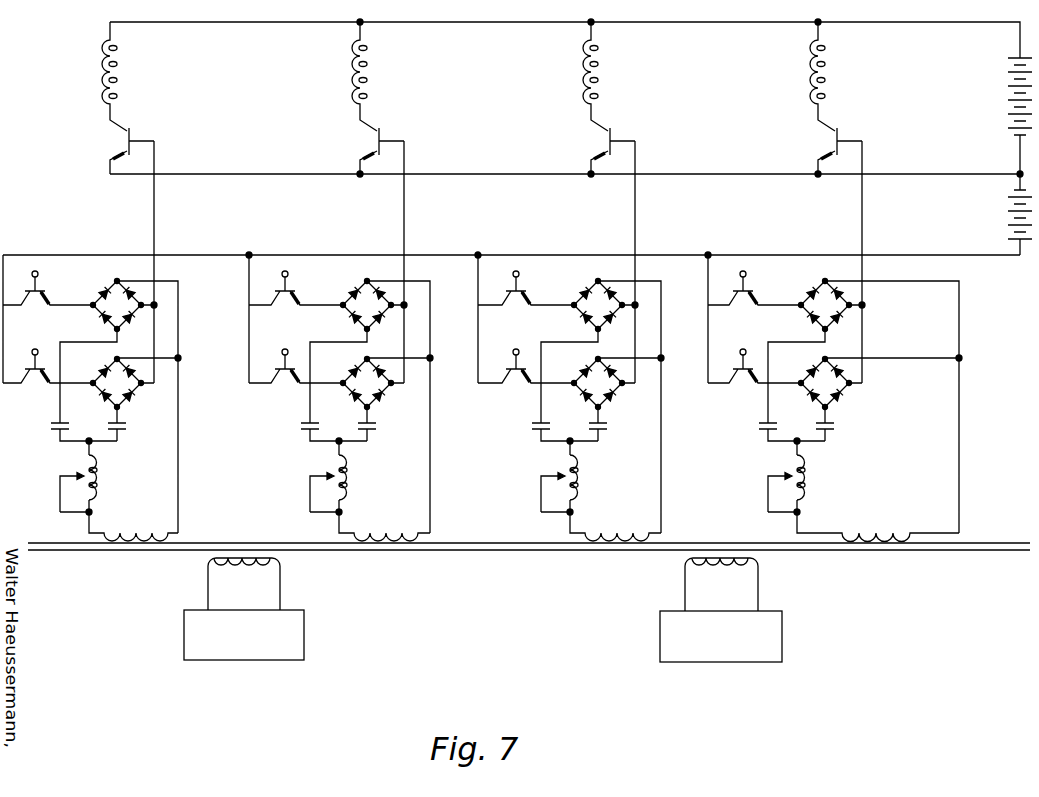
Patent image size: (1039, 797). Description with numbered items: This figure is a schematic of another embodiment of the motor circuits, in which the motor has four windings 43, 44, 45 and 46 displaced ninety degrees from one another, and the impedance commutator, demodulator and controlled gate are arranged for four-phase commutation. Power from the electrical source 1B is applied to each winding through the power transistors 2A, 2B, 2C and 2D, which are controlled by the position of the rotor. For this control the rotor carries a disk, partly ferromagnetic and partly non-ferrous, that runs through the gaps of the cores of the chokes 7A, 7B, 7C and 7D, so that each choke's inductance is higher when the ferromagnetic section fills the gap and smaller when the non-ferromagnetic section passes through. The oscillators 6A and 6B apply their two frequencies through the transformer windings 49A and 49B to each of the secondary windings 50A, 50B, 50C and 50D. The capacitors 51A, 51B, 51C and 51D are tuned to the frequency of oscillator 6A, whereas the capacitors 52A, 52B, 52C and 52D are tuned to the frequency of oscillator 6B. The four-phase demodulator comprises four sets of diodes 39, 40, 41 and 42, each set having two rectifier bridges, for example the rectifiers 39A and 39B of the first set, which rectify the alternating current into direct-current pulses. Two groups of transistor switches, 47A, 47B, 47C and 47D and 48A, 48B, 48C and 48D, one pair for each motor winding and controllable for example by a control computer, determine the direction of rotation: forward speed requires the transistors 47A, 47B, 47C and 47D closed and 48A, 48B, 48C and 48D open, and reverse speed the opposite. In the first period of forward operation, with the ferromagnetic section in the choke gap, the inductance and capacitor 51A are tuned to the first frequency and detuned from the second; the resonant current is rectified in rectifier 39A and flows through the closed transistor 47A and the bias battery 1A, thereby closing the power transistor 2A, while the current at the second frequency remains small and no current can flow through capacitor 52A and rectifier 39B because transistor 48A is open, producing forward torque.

The bias battery 1A is at (1003, 210).
The electrical source 1B is at (1003, 98).
The power transistor 2A is at (125, 141).
The power transistor 2B is at (365, 140).
The power transistor 2C is at (596, 140).
The power transistor 2D is at (823, 140).
The winding 43 is at (118, 80).
The winding 44 is at (379, 64).
The winding 45 is at (610, 64).
The winding 46 is at (837, 64).
The transistor switch 47A is at (44, 292).
The transistor switch 47B is at (301, 285).
The transistor switch 47C is at (532, 285).
The transistor switch 47D is at (759, 285).
The transistor switch 48A is at (35, 385).
The transistor switch 48B is at (301, 383).
The transistor switch 48C is at (532, 383).
The transistor switch 48D is at (759, 383).
The set of diodes 39 is at (105, 352).
The rectifier 39A is at (90, 318).
The rectifier 39B is at (133, 404).
The set of diodes 40 is at (372, 344).
The set of diodes 41 is at (603, 344).
The set of diodes 42 is at (830, 344).
The capacitor 51A is at (57, 432).
The capacitor 51B is at (288, 436).
The capacitor 51C is at (519, 436).
The capacitor 51D is at (746, 436).
The capacitor 52A is at (122, 432).
The capacitor 52B is at (388, 436).
The capacitor 52C is at (620, 436).
The capacitor 52D is at (847, 436).
The choke 7A is at (96, 487).
The choke 7B is at (364, 477).
The choke 7C is at (595, 477).
The choke 7D is at (823, 477).
The secondary winding 50A is at (136, 531).
The secondary winding 50B is at (386, 520).
The secondary winding 50C is at (617, 520).
The secondary winding 50D is at (876, 520).
The transformer winding 49A is at (252, 566).
The transformer winding 49B is at (726, 566).
The oscillator 6A is at (244, 635).
The oscillator 6B is at (721, 636).